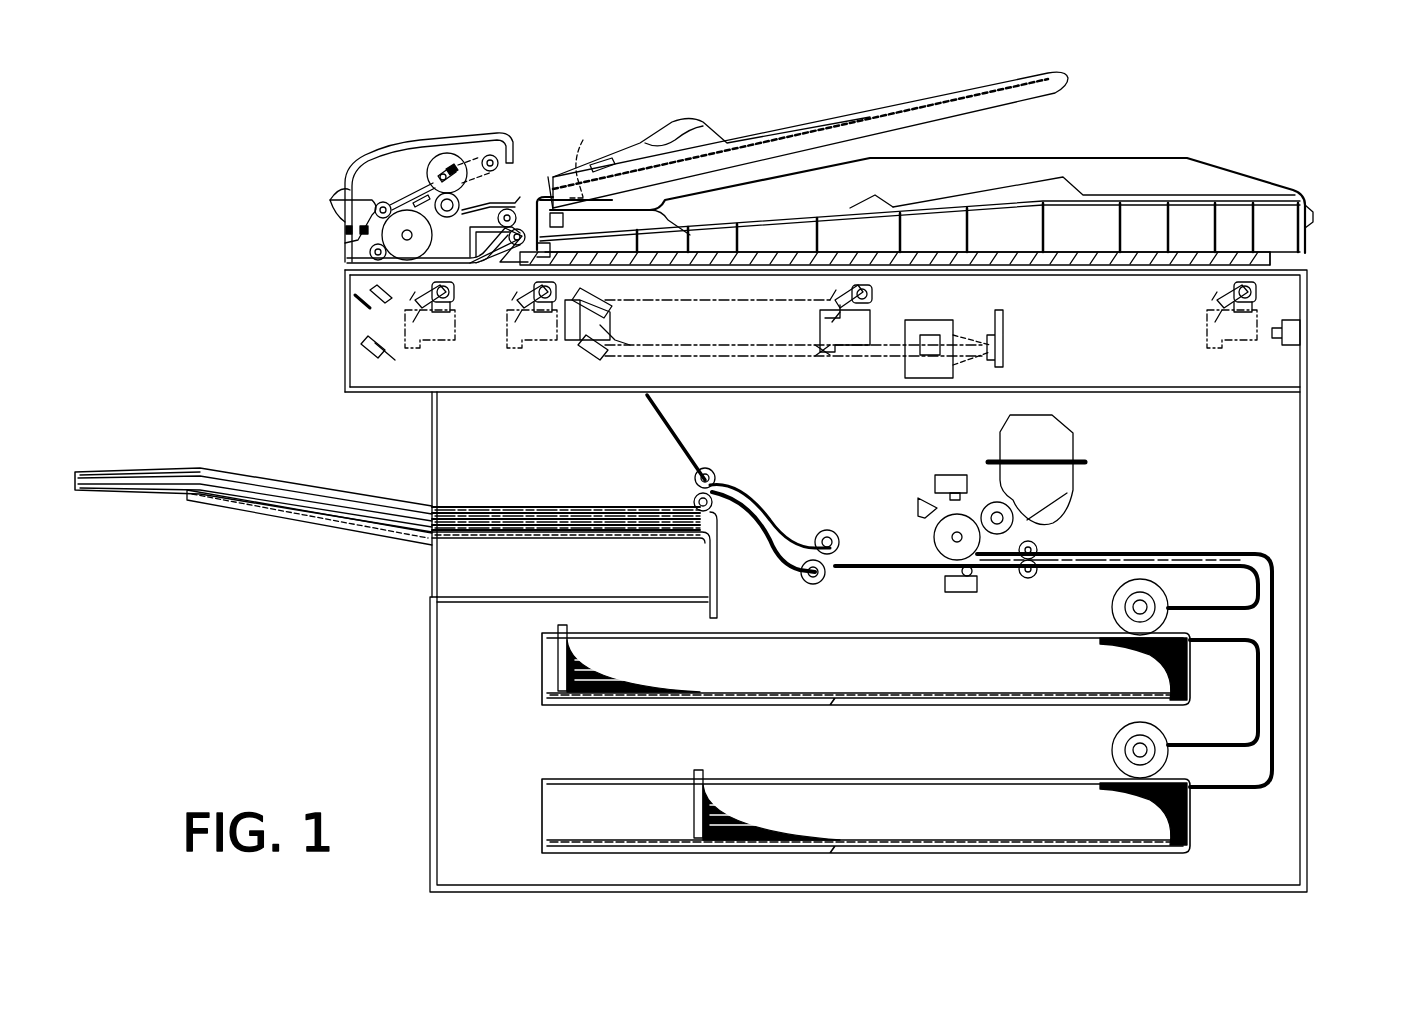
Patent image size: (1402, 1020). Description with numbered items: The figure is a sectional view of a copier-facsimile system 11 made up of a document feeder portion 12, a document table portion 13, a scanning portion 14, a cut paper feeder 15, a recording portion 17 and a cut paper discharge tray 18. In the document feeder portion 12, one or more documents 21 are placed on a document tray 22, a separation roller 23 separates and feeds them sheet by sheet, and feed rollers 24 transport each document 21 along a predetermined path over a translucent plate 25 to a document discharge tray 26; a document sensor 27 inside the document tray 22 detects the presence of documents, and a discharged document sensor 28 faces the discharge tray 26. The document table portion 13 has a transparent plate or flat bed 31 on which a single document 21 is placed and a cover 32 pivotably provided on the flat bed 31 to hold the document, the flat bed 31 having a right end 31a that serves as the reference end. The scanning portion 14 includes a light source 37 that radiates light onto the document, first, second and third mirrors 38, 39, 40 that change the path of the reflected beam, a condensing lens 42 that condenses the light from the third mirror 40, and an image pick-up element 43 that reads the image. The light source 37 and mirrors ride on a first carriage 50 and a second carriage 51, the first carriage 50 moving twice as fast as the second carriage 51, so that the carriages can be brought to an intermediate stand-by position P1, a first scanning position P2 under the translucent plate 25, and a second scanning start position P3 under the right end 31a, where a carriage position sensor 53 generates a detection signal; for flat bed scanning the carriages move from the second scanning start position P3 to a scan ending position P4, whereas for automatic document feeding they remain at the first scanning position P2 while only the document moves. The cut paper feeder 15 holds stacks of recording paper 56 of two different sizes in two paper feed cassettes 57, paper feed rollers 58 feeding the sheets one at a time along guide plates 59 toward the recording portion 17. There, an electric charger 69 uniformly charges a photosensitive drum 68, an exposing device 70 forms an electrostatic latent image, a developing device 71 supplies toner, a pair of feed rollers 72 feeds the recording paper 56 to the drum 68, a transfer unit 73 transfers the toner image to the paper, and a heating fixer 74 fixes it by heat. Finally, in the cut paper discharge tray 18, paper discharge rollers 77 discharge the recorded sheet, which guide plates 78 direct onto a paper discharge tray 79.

The copier-facsimile system 11 is at (1312, 452).
The document feeder portion 12 is at (425, 158).
The document table portion 13 is at (920, 243).
The scanning portion 14 is at (345, 292).
The cut paper feeder 15 is at (546, 718).
The recording portion 17 is at (932, 535).
The cut paper discharge tray 18 is at (302, 514).
The document 21 is at (965, 95).
The document tray 22 is at (750, 140).
The separation roller 23 is at (448, 160).
The feed rollers 24 is at (345, 215).
The translucent plate 25 is at (440, 300).
The document discharge tray 26 is at (660, 232).
The document sensor 27 is at (598, 156).
The discharged document sensor 28 is at (550, 194).
The transparent plate 31 is at (1140, 275).
The right end of the flat bed 31a is at (1275, 270).
The cover 32 is at (1300, 225).
The light source 37 is at (872, 292).
The first mirror 38 is at (818, 322).
The second mirror 39 is at (360, 328).
The third mirror 40 is at (365, 368).
The condensing lens 42 is at (930, 355).
The image pick-up element 43 is at (990, 340).
The first carriage 50 is at (808, 340).
The second carriage 51 is at (615, 372).
The carriage position sensor 53 is at (1305, 335).
The recording paper 56 is at (542, 507).
The paper feed cassettes 57 is at (540, 680).
The paper feed rollers 58 is at (1118, 625).
The guide plates 59 is at (1213, 565).
The photosensitive drum 68 is at (930, 520).
The electric charger 69 is at (912, 500).
The exposing device 70 is at (948, 482).
The developing device 71 is at (990, 505).
The feed rollers 72 is at (1040, 565).
The transfer unit 73 is at (962, 595).
The heating fixer 74 is at (803, 583).
The paper discharge rollers 77 is at (714, 485).
The guide plates 78 is at (755, 535).
The paper discharge tray 79 is at (585, 540).
The intermediate stand-by position P1 is at (812, 375).
The first scanning position P2 is at (400, 375).
The second scanning start position P3 is at (1200, 375).
The scan ending position P4 is at (505, 375).